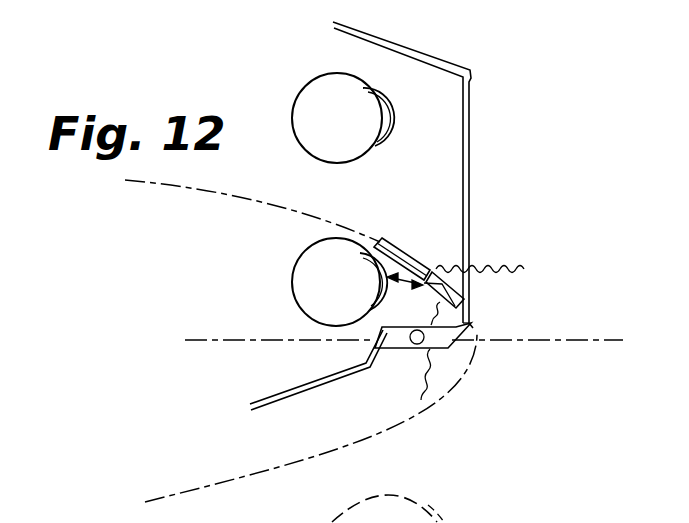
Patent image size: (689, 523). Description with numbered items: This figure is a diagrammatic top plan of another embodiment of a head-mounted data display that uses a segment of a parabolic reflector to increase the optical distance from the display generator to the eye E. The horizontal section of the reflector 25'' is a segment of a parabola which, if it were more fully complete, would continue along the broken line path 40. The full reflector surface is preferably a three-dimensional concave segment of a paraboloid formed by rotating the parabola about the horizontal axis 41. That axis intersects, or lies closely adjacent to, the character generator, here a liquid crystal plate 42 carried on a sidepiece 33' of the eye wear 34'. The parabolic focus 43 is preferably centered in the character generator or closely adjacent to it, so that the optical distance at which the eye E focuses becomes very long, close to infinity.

The eye E is at (300, 284).
The broken line path 40 is at (253, 198).
The reflector 25'' is at (449, 260).
The eye wear 34' is at (447, 175).
The horizontal axis 41 is at (245, 342).
The liquid crystal plate 42 is at (407, 353).
The parabolic focus 43 is at (333, 343).
The sidepiece 33' is at (310, 392).